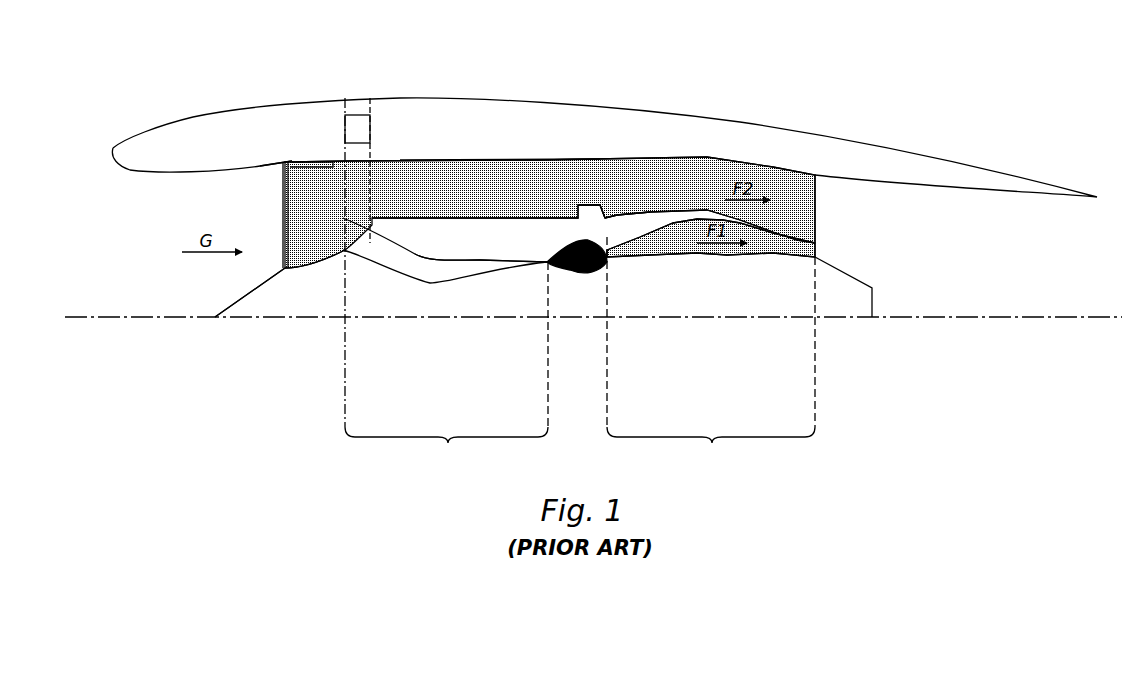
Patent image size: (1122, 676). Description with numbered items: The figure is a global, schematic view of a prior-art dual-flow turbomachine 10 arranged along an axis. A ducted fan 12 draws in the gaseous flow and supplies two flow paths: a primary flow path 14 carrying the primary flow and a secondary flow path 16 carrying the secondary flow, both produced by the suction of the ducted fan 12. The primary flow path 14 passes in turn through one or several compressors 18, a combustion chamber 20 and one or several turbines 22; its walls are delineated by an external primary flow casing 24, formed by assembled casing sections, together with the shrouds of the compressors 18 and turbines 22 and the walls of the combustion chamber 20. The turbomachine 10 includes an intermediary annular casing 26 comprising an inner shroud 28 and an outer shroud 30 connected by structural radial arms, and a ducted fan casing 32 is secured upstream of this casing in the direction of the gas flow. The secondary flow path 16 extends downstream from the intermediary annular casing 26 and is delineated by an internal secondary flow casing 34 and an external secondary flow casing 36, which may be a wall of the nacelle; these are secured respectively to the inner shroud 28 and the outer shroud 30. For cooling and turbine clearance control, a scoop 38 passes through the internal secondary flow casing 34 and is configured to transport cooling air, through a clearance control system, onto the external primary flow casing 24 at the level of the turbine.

The turbomachine 10 is at (830, 72).
The ducted fan 12 is at (283, 192).
The primary flow path 14 is at (428, 268).
The secondary flow path 16 is at (443, 168).
The compressor 18 is at (720, 257).
The combustion chamber 20 is at (573, 278).
The turbine 22 is at (739, 347).
The external primary flow casing 24 is at (498, 252).
The intermediary annular casing 26 is at (338, 146).
The inner shroud 28 is at (373, 205).
The outer shroud 30 is at (354, 128).
The ducted fan casing 32 is at (138, 150).
The internal secondary flow casing 34 is at (500, 168).
The external secondary flow casing 36 is at (605, 205).
The scoop 38 is at (622, 222).